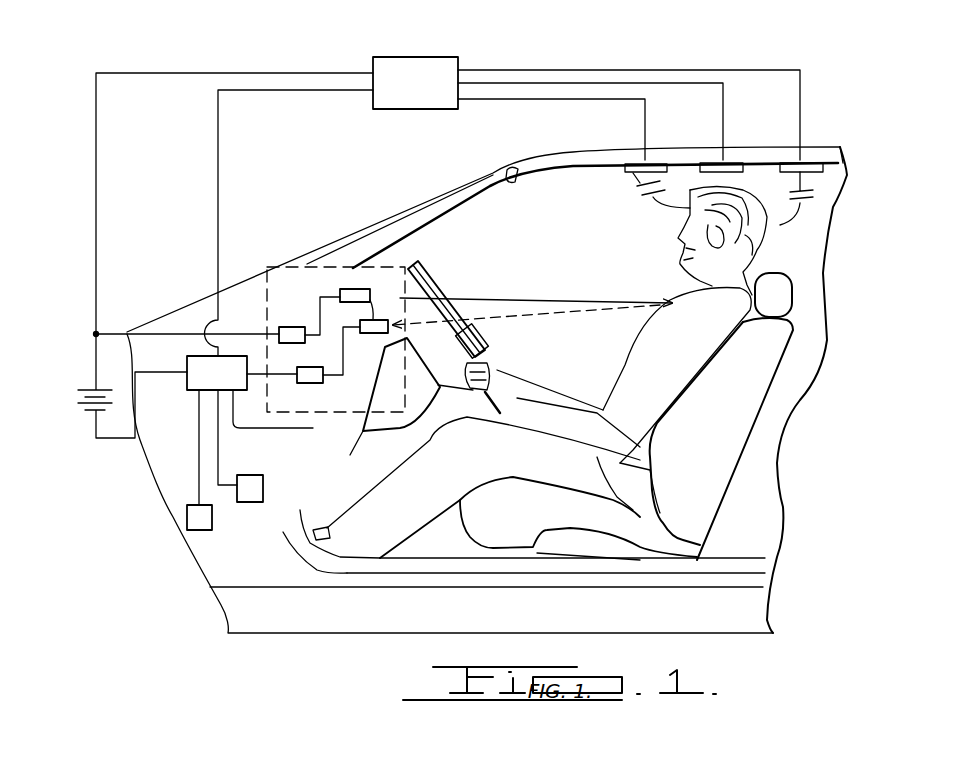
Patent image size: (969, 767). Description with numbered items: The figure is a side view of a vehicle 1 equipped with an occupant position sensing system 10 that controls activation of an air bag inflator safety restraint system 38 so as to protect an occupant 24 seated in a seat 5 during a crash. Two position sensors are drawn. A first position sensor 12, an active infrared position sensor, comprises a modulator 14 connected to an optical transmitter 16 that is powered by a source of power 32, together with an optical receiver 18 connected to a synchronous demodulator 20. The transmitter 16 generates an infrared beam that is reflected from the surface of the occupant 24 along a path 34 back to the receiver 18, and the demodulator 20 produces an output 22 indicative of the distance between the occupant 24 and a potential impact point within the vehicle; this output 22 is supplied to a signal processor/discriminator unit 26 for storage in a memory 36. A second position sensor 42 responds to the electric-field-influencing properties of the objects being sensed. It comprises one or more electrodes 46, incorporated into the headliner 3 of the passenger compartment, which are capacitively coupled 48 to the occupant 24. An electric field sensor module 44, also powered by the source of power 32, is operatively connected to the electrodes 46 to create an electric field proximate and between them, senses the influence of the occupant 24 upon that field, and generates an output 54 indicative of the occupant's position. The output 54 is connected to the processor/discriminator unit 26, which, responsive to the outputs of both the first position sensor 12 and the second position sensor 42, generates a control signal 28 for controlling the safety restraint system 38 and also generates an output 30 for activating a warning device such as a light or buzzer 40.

The vehicle 1 is at (232, 638).
The headliner 3 is at (858, 170).
The seat 5 is at (805, 405).
The occupant position sensing system 10 is at (105, 458).
The first position sensor 12 is at (300, 265).
The modulator 14 is at (290, 327).
The optical transmitter 16 is at (357, 290).
The optical receiver 18 is at (370, 333).
The synchronous demodulator 20 is at (310, 383).
The output 22 is at (276, 376).
The occupant 24 is at (680, 238).
The signal processor/discriminator unit 26 is at (193, 383).
The control signal 28 is at (313, 430).
The output 30 is at (220, 447).
The source of power 32 is at (80, 393).
The line of sight 34 is at (515, 298).
The memory 36 is at (200, 520).
The air bag inflator safety restraint system 38 is at (490, 340).
The light or buzzer 40 is at (250, 493).
The second position sensor 42 is at (685, 62).
The electric field sensor module 44 is at (380, 100).
The electrodes 46 is at (622, 176).
The capacitive coupling 48 is at (813, 198).
The output 54 is at (218, 152).